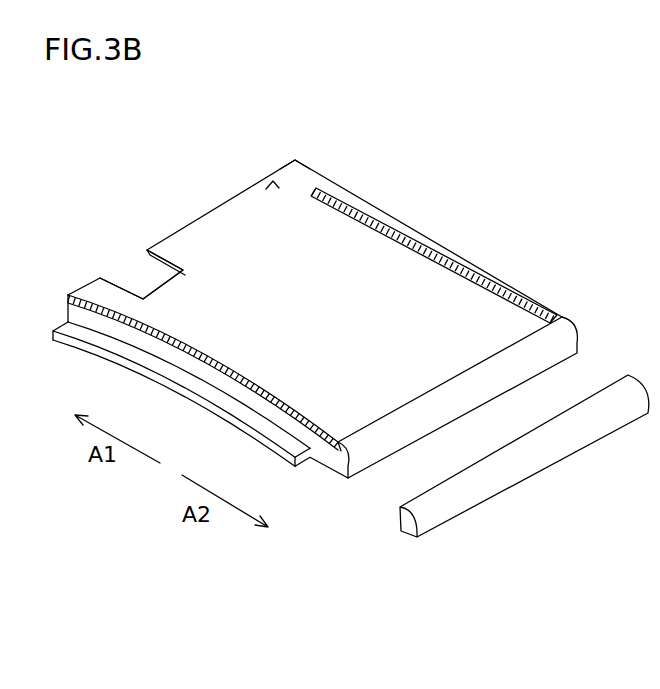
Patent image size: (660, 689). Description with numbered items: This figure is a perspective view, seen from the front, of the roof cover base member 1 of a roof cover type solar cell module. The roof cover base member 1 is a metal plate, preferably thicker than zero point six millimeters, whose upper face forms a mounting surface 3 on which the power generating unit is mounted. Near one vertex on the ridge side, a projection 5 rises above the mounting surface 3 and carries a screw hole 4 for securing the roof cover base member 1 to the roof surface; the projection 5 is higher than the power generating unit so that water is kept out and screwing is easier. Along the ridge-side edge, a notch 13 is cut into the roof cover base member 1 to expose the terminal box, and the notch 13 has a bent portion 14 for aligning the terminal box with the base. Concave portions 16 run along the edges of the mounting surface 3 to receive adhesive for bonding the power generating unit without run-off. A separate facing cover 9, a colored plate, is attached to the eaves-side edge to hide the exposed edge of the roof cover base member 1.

The roof cover base member 1 is at (457, 307).
The mounting surface 3 is at (334, 290).
The screw hole 4 is at (273, 186).
The projection 5 is at (300, 170).
The facing cover 9 is at (458, 497).
The notch 13 is at (145, 283).
The bent portion 14 is at (149, 253).
The concave portion 16 is at (427, 243).